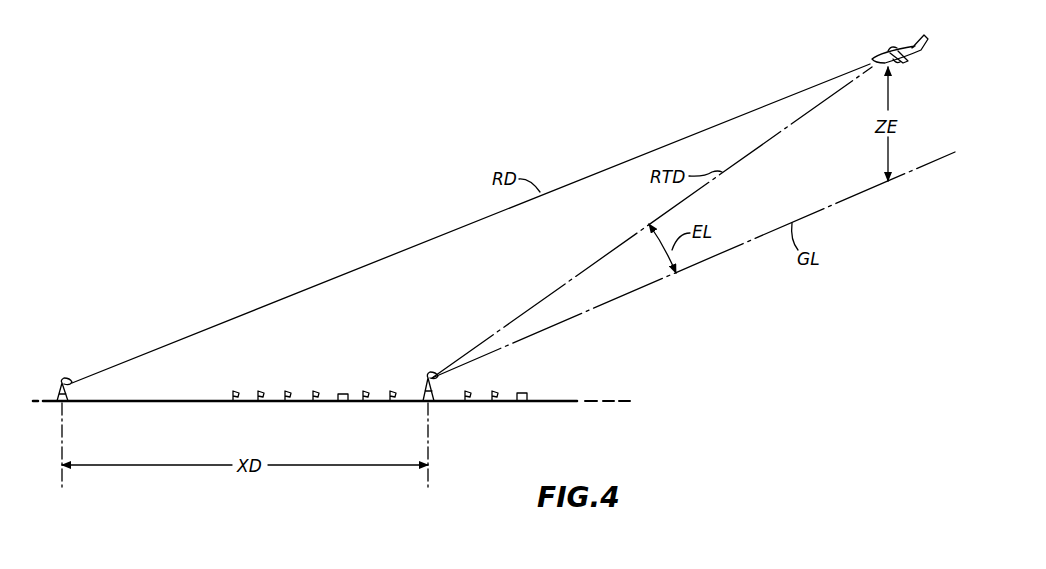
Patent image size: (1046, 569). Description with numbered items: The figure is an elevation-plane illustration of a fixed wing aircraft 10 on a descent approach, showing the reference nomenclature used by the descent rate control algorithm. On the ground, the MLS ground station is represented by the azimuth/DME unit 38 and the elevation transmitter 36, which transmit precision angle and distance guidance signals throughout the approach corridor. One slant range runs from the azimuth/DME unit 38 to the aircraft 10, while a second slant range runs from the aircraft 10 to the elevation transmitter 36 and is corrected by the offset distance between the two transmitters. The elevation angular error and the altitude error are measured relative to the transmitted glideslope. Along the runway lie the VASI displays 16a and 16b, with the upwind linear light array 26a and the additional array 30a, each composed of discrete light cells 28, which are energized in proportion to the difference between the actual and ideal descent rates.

The fixed wing aircraft 10 is at (876, 50).
The azimuth/DME unit 38 is at (62, 380).
The elevation transmitter 36 is at (428, 375).
The upwind linear light array 26a is at (286, 390).
The discrete light cell 28 is at (225, 402).
The VASI display 16a is at (342, 404).
The additional light array 30a is at (490, 404).
The VASI display 16b is at (530, 392).